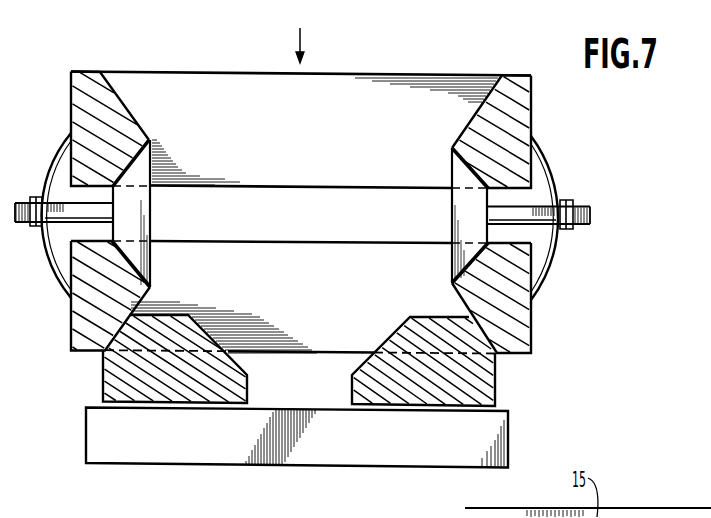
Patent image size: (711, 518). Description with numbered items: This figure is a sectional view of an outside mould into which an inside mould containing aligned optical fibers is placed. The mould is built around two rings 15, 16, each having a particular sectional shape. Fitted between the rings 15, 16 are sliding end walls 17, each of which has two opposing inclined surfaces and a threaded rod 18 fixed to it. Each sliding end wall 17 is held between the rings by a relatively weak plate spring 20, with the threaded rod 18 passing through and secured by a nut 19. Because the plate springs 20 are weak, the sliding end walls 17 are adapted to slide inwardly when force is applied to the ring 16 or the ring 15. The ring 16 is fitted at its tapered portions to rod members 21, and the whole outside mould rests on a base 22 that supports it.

The ring 15 is at (371, 85).
The ring 16 is at (332, 354).
The sliding end wall 17 is at (150, 206).
The threaded rod 18 is at (23, 204).
The nut 19 is at (39, 226).
The plate spring 20 is at (55, 272).
The rod member 21 is at (105, 382).
The base 22 is at (310, 452).